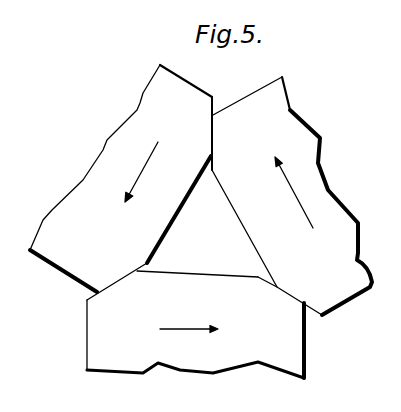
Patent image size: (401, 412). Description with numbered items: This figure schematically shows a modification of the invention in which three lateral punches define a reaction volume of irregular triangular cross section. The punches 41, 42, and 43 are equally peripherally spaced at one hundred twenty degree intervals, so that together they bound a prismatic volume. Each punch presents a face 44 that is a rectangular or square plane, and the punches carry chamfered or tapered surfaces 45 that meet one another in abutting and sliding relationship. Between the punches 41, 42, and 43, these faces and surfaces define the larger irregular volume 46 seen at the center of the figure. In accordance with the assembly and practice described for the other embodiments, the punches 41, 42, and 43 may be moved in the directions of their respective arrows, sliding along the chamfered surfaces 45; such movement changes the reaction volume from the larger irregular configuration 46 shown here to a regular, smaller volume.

The punch 41 is at (78, 198).
The punch 42 is at (318, 163).
The punch 43 is at (293, 358).
The face 44 is at (250, 242).
The chamfered or tapered surface 45 is at (213, 134).
The irregular volume 46 is at (218, 225).